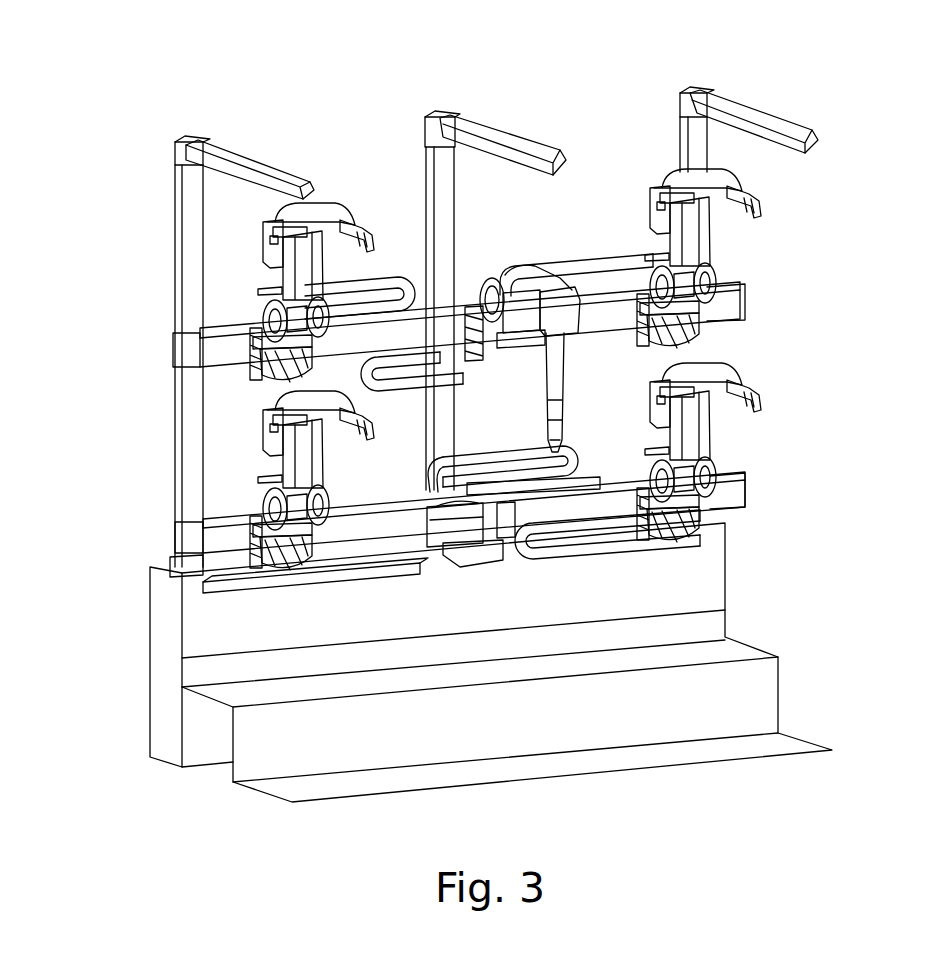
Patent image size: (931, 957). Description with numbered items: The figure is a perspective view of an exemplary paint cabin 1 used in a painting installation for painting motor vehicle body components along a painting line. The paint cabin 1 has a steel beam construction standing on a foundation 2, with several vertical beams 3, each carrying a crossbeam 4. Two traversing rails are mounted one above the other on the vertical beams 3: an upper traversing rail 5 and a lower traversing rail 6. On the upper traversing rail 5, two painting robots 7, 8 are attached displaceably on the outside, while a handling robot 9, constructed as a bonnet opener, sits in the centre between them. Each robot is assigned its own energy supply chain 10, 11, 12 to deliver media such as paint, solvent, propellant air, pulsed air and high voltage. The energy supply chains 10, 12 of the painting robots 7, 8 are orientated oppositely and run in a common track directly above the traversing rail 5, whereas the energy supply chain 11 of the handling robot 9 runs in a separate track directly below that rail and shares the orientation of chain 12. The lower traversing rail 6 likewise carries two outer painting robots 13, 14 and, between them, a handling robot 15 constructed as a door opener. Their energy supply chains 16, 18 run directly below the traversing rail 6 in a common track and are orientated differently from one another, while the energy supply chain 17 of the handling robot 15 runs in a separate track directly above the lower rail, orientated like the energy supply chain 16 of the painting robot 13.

The paint cabin 1 is at (461, 288).
The foundation 2 is at (165, 620).
The vertical beams 3 is at (190, 276).
The crossbeam 4 is at (237, 158).
The upper traversing rail 5 is at (200, 352).
The lower traversing rail 6 is at (205, 530).
The painting robot 7 is at (263, 243).
The painting robot 8 is at (722, 236).
The handling robot 9 is at (487, 268).
The energy supply chain 10 is at (377, 277).
The energy supply chain 11 is at (455, 384).
The energy supply chain 12 is at (600, 260).
The painting robot 13 is at (263, 458).
The painting robot 14 is at (724, 432).
The handling robot 15 is at (456, 568).
The energy supply chain 16 is at (262, 590).
The energy supply chain 17 is at (437, 472).
The energy supply chain 18 is at (573, 557).